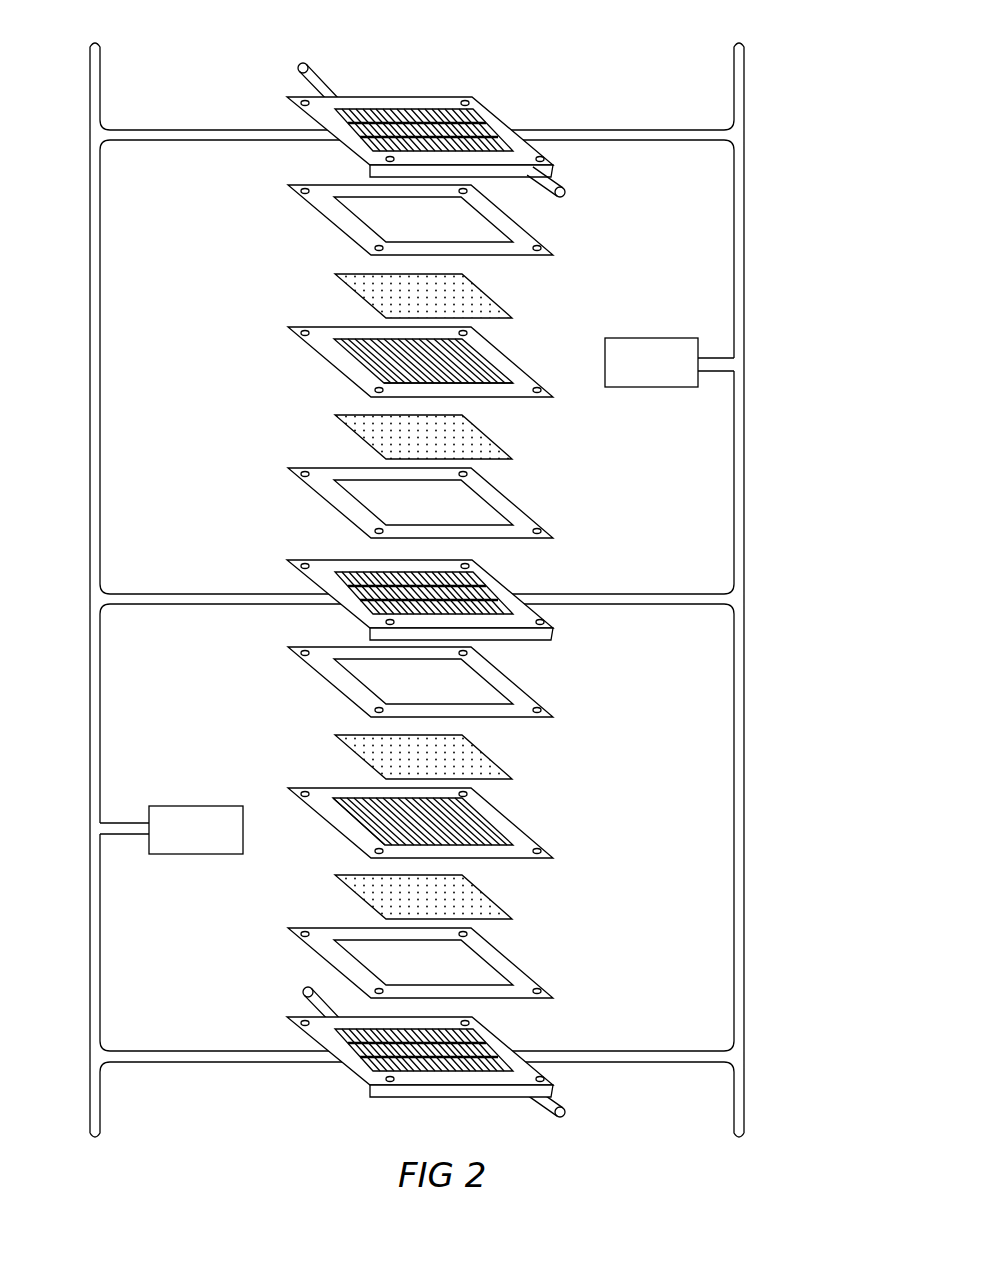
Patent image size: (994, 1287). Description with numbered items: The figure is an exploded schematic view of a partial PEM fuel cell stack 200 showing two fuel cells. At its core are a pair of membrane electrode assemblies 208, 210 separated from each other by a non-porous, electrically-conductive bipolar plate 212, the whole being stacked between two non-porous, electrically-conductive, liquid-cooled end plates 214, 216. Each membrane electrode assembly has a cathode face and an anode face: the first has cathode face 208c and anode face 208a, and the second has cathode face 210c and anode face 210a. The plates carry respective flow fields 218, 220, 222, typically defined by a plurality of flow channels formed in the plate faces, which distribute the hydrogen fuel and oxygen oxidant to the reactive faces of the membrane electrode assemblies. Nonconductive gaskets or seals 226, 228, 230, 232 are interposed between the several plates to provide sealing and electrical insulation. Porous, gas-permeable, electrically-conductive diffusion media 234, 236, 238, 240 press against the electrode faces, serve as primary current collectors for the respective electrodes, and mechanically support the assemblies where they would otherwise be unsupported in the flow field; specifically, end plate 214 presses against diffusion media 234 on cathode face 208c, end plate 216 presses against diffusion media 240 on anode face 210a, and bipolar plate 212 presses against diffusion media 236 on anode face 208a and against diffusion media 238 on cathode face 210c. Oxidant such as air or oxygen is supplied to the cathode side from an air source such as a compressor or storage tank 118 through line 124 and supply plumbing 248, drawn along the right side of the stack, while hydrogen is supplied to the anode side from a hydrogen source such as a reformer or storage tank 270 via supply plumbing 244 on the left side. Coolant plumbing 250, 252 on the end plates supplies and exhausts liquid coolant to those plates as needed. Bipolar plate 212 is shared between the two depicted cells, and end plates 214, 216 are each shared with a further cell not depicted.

The partial PEM fuel cell stack 200 is at (765, 860).
The storage tank 118 is at (632, 338).
The line 124 is at (718, 372).
The membrane electrode assembly 208 is at (387, 365).
The anode face 208a is at (482, 387).
The cathode face 208c is at (478, 362).
The membrane electrode assembly 210 is at (466, 796).
The anode face 210a is at (362, 835).
The cathode face 210c is at (353, 797).
The bipolar plate 212 is at (359, 576).
The end plate 214 is at (341, 141).
The end plate 216 is at (452, 1070).
The flow field 218 is at (328, 148).
The flow field 220 is at (468, 582).
The flow field 222 is at (373, 1058).
The gasket 226 is at (350, 228).
The gasket 228 is at (322, 485).
The gasket 230 is at (523, 697).
The gasket 232 is at (505, 957).
The diffusion media 234 is at (355, 283).
The diffusion media 236 is at (355, 430).
The diffusion media 238 is at (478, 757).
The diffusion media 240 is at (483, 900).
The supply plumbing 244 is at (90, 940).
The supply plumbing 248 is at (745, 485).
The coolant plumbing 250 is at (318, 82).
The coolant plumbing 252 is at (565, 182).
The storage tank 270 is at (230, 806).